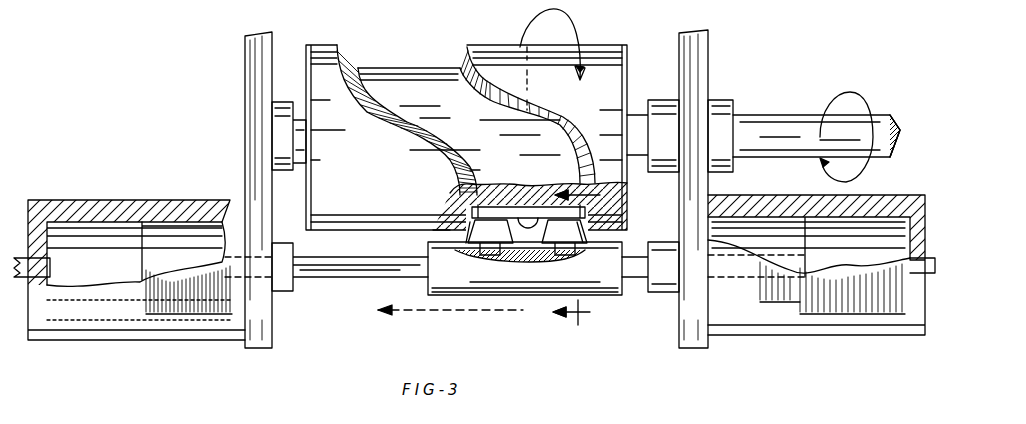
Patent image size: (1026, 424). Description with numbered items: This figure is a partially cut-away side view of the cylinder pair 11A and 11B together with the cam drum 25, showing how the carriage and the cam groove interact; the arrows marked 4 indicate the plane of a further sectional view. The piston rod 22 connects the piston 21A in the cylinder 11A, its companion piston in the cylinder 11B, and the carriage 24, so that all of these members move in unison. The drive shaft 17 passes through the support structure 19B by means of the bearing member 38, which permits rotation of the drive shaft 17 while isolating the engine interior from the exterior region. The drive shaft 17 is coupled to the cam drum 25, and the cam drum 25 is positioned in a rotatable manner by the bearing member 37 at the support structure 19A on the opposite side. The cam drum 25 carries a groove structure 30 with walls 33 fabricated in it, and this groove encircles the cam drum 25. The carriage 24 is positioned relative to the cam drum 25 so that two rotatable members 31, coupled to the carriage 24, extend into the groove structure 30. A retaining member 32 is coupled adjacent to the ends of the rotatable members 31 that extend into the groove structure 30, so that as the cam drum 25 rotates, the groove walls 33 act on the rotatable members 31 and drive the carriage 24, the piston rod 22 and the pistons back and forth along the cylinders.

The cylinder 11A is at (132, 200).
The cylinder 11B is at (862, 336).
The drive shaft 17 is at (787, 114).
The support structure 19A is at (257, 62).
The support structure 19B is at (712, 40).
The piston 21A is at (175, 312).
The piston rod 22 is at (358, 278).
The carriage 24 is at (470, 296).
The cam drum 25 is at (513, 28).
The groove structure 30 is at (412, 66).
The rotatable members 31 is at (521, 250).
The retaining member 32 is at (520, 235).
The walls 33 is at (352, 62).
The bearing member 37 is at (278, 128).
The bearing member 38 is at (663, 114).
The section line of FIG. 4 is at (583, 256).